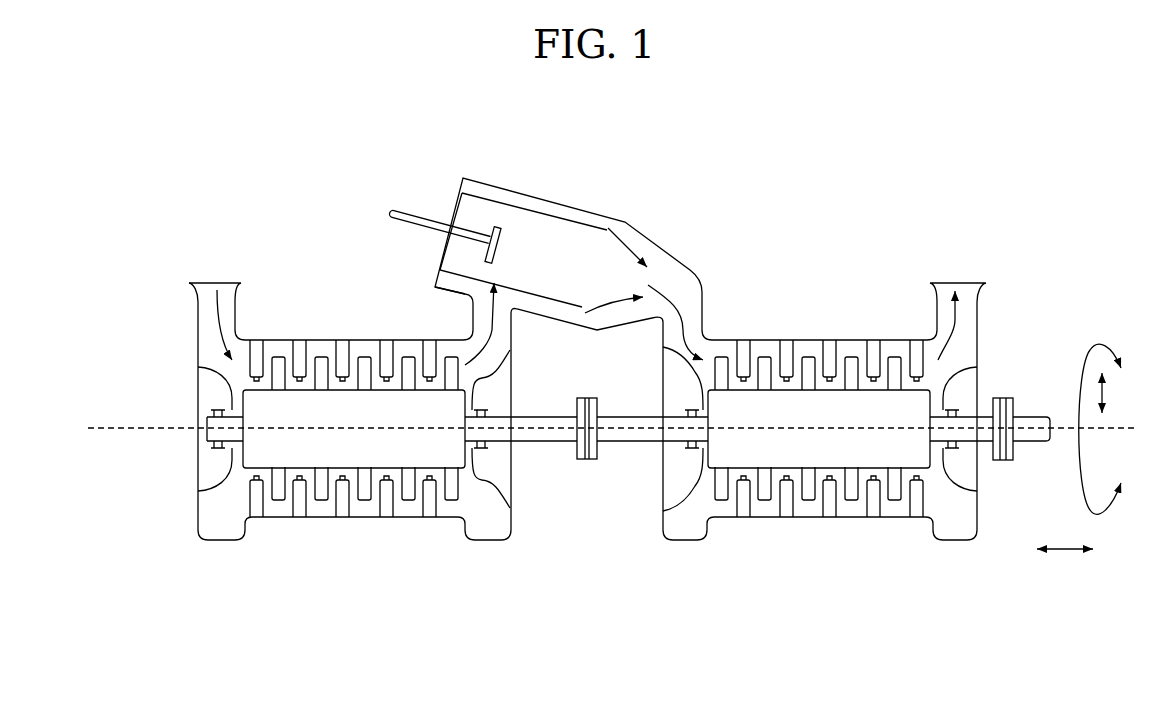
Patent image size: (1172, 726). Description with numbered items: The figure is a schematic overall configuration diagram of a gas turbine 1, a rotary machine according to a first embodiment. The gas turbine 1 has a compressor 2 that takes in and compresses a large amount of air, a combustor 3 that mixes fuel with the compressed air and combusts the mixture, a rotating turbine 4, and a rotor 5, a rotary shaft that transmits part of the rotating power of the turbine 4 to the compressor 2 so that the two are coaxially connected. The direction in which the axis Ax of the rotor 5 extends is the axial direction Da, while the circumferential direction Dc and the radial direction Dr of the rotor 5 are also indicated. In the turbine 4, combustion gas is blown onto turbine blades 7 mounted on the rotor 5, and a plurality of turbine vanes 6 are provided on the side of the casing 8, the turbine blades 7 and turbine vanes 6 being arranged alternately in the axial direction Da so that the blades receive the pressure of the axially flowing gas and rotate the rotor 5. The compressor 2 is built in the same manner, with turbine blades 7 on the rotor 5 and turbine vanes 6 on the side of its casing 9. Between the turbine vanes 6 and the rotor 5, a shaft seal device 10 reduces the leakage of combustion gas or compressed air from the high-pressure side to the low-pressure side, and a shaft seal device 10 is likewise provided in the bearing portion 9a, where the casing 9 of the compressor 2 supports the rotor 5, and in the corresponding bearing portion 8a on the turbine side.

The gas turbine 1 is at (917, 213).
The compressor 2 is at (357, 455).
The combustor 3 is at (703, 153).
The turbine 4 is at (838, 455).
The rotor 5 is at (612, 443).
The turbine vanes 6 is at (344, 360).
The turbine blades 7 is at (322, 357).
The casing 8 is at (765, 518).
The turbine casing inner wall 8a is at (838, 429).
The casing 9 is at (300, 518).
The bearing portion 9a is at (198, 368).
The shaft seal device 10 is at (215, 448).
The axis Ax is at (106, 428).
The circumferential direction Dc is at (1102, 342).
The radial direction Dr is at (1104, 395).
The axial direction Da is at (1065, 570).